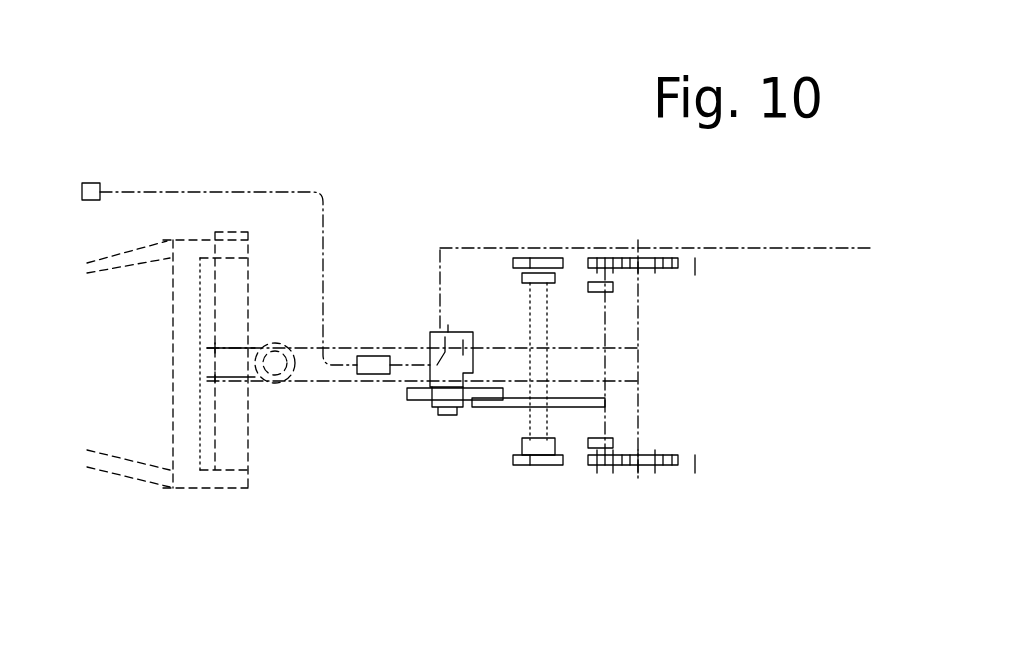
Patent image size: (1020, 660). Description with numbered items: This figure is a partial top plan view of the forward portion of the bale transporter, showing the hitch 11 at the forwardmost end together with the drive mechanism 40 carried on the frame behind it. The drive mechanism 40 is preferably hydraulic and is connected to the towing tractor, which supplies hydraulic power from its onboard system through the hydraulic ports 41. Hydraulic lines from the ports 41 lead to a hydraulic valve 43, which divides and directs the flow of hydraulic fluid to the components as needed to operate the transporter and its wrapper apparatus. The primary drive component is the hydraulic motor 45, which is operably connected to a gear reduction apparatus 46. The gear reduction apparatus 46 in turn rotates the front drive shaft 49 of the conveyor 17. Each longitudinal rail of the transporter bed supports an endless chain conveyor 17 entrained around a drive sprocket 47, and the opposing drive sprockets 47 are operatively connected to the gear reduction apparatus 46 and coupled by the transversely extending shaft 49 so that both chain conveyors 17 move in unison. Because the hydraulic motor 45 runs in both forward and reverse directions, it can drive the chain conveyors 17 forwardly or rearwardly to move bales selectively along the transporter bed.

The hitch 11 is at (250, 445).
The endless chain conveyor 17 is at (672, 272).
The drive mechanism 40 is at (416, 124).
The hydraulic ports 41 is at (92, 183).
The hydraulic valve 43 is at (377, 374).
The hydraulic motor 45 is at (460, 332).
The gear reduction apparatus 46 is at (493, 407).
The drive sprocket 47 is at (530, 258).
The drive shaft 49 is at (528, 425).